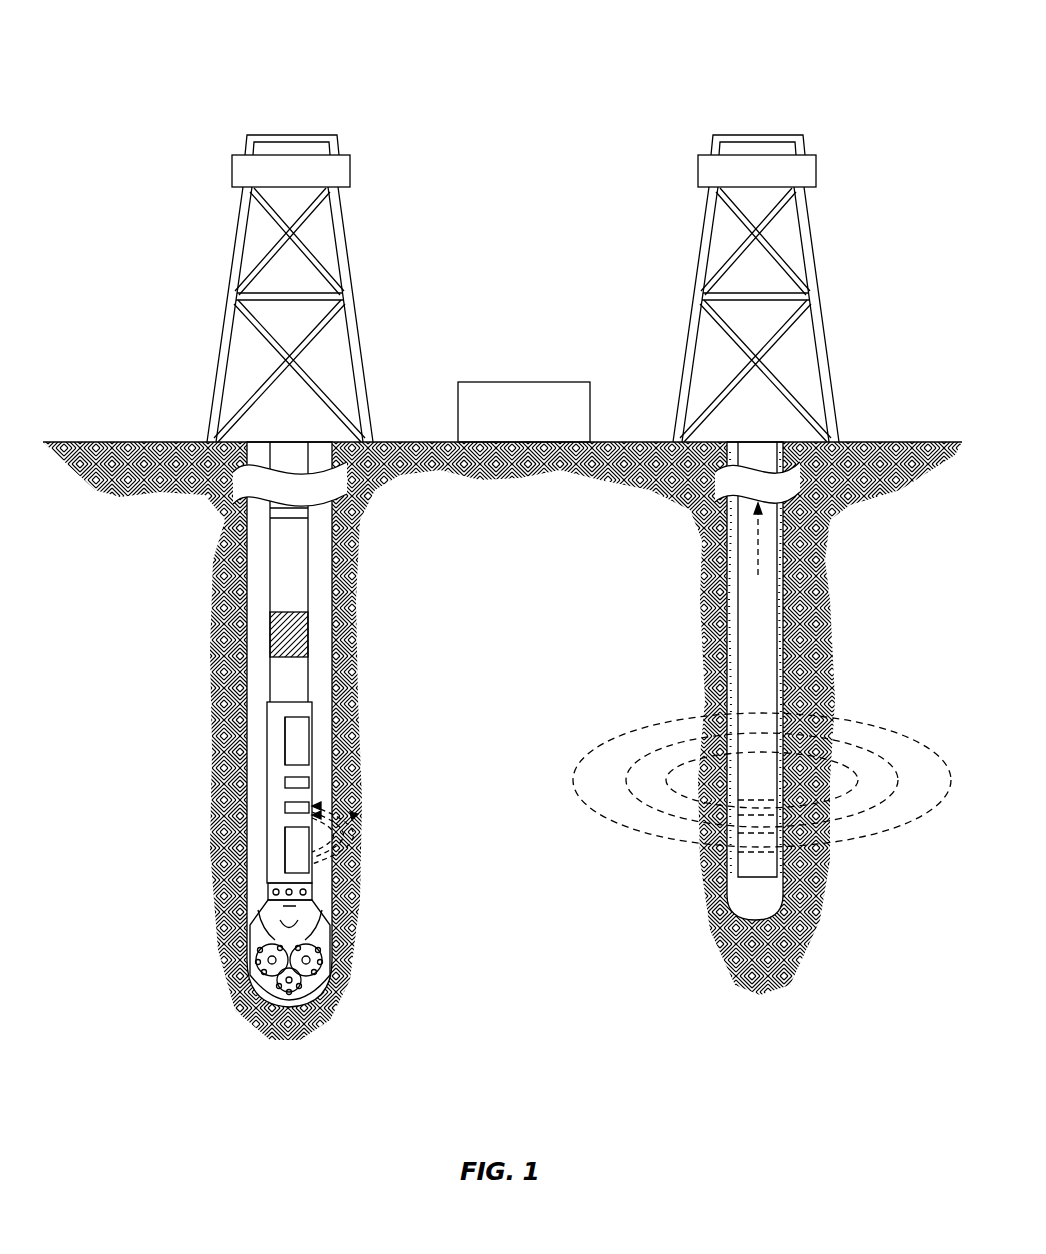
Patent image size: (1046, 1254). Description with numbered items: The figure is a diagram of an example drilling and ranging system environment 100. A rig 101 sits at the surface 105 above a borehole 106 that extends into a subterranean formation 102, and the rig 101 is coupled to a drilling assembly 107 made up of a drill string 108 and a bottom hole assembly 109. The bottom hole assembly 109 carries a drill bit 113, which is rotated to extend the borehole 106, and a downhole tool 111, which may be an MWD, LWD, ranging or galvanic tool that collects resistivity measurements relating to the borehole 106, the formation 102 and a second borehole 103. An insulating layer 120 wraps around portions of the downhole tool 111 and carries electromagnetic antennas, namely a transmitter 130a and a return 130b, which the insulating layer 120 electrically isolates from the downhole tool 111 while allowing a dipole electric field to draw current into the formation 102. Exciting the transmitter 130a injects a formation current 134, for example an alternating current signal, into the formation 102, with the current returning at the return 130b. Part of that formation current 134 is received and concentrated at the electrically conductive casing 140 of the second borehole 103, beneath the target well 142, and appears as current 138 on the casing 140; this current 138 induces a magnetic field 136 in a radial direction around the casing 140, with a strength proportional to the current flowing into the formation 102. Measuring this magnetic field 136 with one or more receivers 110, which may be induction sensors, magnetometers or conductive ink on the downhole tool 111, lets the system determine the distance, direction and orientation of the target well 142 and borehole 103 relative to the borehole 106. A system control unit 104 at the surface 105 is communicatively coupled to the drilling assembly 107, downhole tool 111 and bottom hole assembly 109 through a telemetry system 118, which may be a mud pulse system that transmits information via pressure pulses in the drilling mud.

The drilling and ranging system environment 100 is at (165, 62).
The rig 101 is at (232, 172).
The subterranean formation 102 is at (525, 498).
The second borehole 103 is at (790, 680).
The system control unit 104 is at (546, 424).
The surface 105 is at (648, 442).
The borehole 106 is at (248, 535).
The drilling assembly 107 is at (165, 668).
The drill string 108 is at (270, 568).
The bottom hole assembly 109 is at (330, 672).
The receiver 110 is at (268, 893).
The downhole tool 111 is at (312, 770).
The drill bit 113 is at (252, 940).
The telemetry system 118 is at (312, 628).
The insulating layer 120 is at (295, 791).
The transmitter 130a is at (285, 742).
The return 130b is at (305, 782).
The formation current 134 is at (383, 838).
The magnetic field 136 is at (640, 835).
The current 138 is at (760, 548).
The casing 140 is at (775, 877).
The target well 142 is at (843, 175).